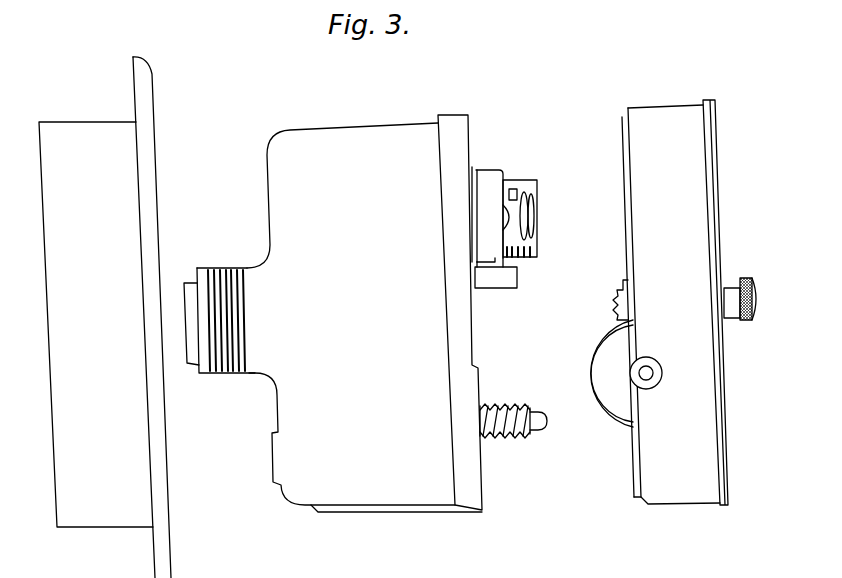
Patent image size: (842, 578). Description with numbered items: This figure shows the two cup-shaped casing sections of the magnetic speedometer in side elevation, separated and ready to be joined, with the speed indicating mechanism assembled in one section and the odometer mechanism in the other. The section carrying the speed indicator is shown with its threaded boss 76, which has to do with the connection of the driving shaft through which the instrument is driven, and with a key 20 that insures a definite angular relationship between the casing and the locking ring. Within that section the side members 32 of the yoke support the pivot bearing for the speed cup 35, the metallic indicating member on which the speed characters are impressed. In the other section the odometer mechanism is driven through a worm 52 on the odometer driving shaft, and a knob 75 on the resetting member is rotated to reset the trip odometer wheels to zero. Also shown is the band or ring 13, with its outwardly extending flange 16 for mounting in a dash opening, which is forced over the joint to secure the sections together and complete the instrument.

The band or ring 13 is at (62, 122).
The outwardly extending flange 16 is at (150, 62).
The key 20 is at (386, 508).
The side members of a yoke 32 is at (496, 180).
The speed cup 35 is at (538, 238).
The worm 52 is at (507, 438).
The knob 75 is at (748, 322).
The threaded boss 76 is at (223, 374).